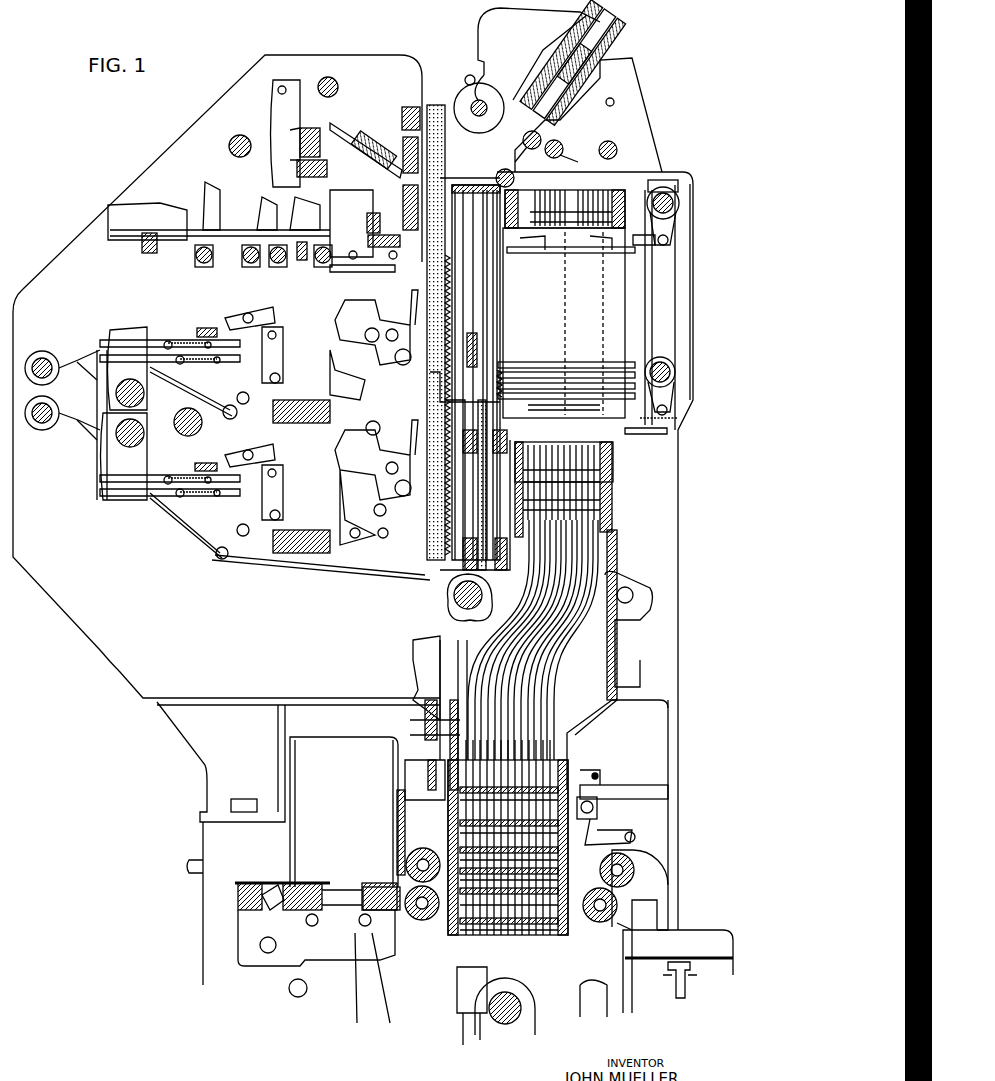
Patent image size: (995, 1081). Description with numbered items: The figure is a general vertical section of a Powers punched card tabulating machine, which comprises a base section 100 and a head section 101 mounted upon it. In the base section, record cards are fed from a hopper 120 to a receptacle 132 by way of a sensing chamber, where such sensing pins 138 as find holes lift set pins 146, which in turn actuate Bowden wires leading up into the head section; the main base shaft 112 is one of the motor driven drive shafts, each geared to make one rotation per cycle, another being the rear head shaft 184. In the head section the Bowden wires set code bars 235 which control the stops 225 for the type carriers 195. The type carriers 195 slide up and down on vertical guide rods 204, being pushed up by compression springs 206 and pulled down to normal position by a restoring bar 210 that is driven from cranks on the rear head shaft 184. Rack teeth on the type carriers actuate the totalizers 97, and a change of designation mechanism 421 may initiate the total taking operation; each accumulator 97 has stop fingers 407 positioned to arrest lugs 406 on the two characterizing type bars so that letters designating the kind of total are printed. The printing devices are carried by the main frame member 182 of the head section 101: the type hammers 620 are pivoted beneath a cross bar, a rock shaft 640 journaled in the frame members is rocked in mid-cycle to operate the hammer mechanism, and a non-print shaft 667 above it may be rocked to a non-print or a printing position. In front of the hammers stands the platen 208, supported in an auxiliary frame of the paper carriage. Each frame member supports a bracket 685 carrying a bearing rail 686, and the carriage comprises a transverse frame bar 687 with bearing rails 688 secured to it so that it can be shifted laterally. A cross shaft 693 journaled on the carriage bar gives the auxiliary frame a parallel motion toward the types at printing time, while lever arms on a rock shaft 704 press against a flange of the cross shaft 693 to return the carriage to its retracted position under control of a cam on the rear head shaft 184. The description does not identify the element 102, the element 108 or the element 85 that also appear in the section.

The main frame member 182 is at (178, 134).
The cover 102 is at (481, 24).
The platen 208 is at (493, 92).
The transverse frame bar 687 is at (596, 45).
The bearing rails 688 is at (624, 36).
The bearing rail 686 is at (604, 57).
The bracket 685 is at (655, 108).
The cross shaft 693 is at (527, 149).
The rock shaft 704 is at (500, 171).
The type carriers 195 is at (430, 266).
The vertical guide rods 204 is at (462, 312).
The restoring bar 210 is at (478, 353).
The compression springs 206 is at (484, 472).
The lugs 406 is at (433, 520).
The stops 225 is at (586, 362).
The code bars 235 is at (526, 244).
The head section 101 is at (696, 342).
The rear head shaft 184 is at (458, 602).
The change of designation mechanism 421 is at (420, 652).
The set pins 146 is at (585, 792).
The sensing pins 138 is at (462, 948).
The roller 108 is at (424, 922).
The main base shaft 112 is at (522, 1003).
The hopper 120 is at (355, 746).
The receptacle 132 is at (700, 938).
The base section 100 is at (678, 887).
The totalizers 97 is at (226, 318).
The shaft 85 is at (202, 428).
The stop fingers 407 is at (375, 412).
The rock shaft 640 is at (242, 134).
The non-print shaft 667 is at (340, 88).
The type hammers 620 is at (364, 142).